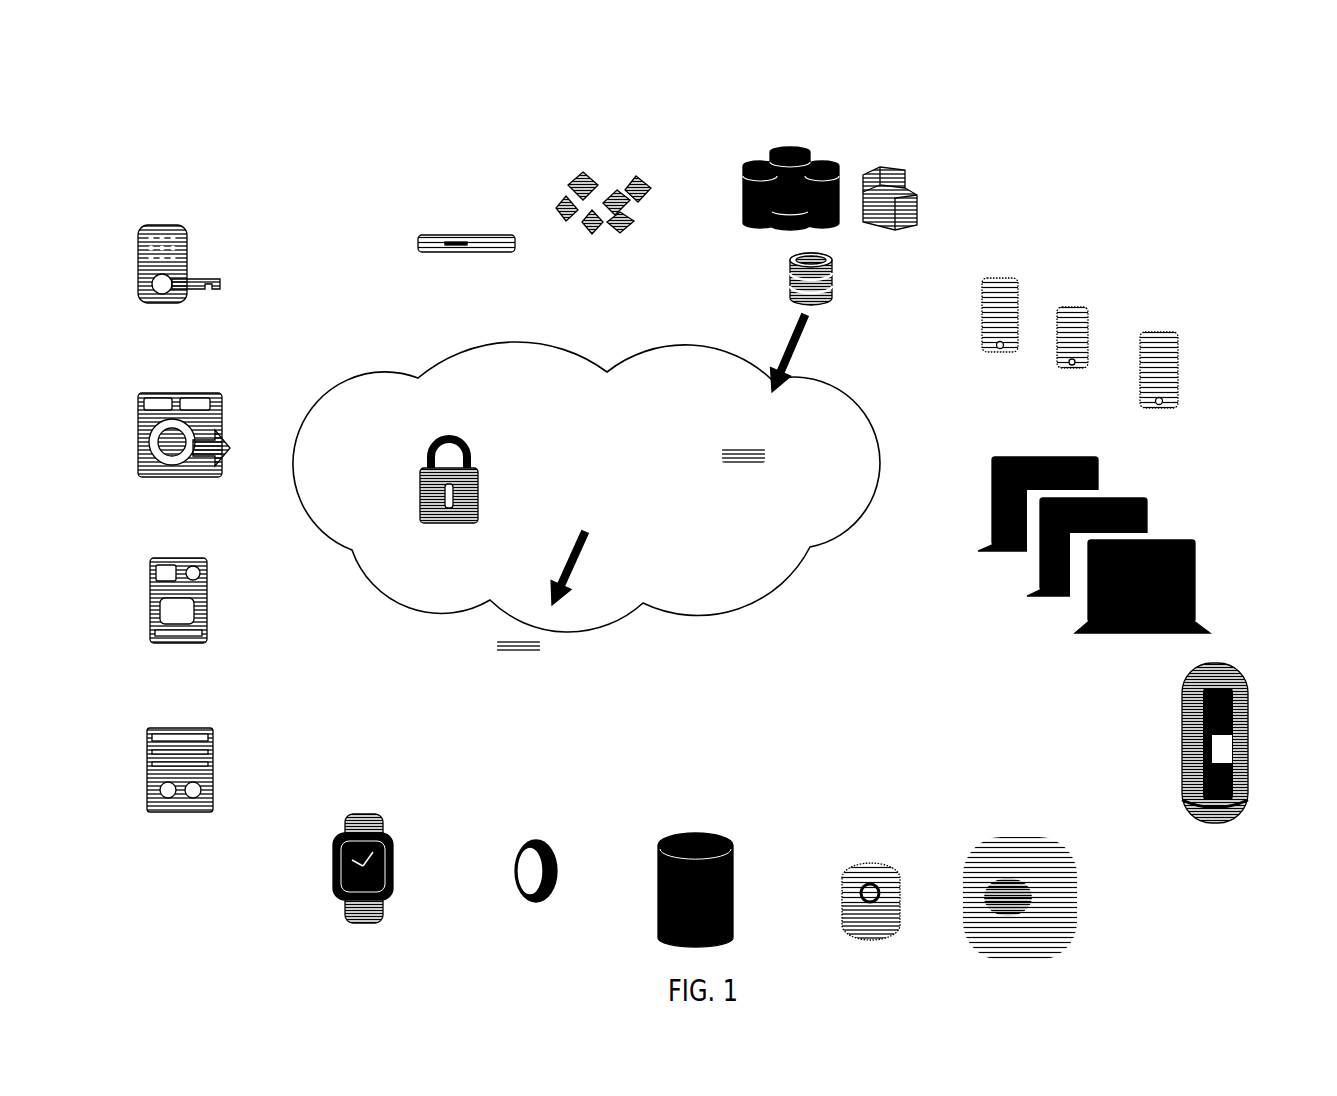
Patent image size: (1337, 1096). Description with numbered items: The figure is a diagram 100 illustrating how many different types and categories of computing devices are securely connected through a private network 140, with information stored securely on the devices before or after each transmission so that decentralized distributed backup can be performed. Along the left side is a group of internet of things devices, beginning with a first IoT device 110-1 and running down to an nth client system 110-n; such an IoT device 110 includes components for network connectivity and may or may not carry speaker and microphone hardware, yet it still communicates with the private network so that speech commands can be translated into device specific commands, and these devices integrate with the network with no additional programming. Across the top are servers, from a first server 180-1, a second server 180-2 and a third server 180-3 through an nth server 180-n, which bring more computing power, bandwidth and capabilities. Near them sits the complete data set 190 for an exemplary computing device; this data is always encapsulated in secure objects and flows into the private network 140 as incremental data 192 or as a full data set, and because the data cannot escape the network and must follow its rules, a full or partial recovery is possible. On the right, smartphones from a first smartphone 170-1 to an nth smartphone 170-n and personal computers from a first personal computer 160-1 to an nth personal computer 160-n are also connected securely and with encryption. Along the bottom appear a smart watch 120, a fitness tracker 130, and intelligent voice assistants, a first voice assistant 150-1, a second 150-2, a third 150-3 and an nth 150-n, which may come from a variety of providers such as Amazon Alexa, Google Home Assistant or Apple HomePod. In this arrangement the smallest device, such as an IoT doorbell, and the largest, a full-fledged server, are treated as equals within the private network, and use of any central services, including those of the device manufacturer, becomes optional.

The diagram 100 is at (1192, 198).
The IoT device 110 is at (270, 465).
The first IoT device 110-1 is at (188, 263).
The nth client system 110-n is at (227, 738).
The smart watch 120 is at (393, 812).
The fitness tracker 130 is at (522, 825).
The private network 140 is at (600, 510).
The intelligent voice assistant 150-1 is at (698, 827).
The intelligent voice assistant 150-2 is at (857, 857).
The intelligent voice assistant 150-3 is at (1072, 910).
The intelligent voice assistant 150-n is at (1153, 770).
The personal computer 160-1 is at (987, 515).
The personal computer 160-n is at (987, 515).
The smartphone 170-1 is at (1247, 295).
The smartphone 170-n is at (1247, 295).
The server 180-1 is at (460, 203).
The server 180-2 is at (602, 177).
The server 180-3 is at (780, 145).
The server 180-n is at (920, 178).
The complete data set 190 is at (718, 284).
The incremental data 192 is at (670, 483).